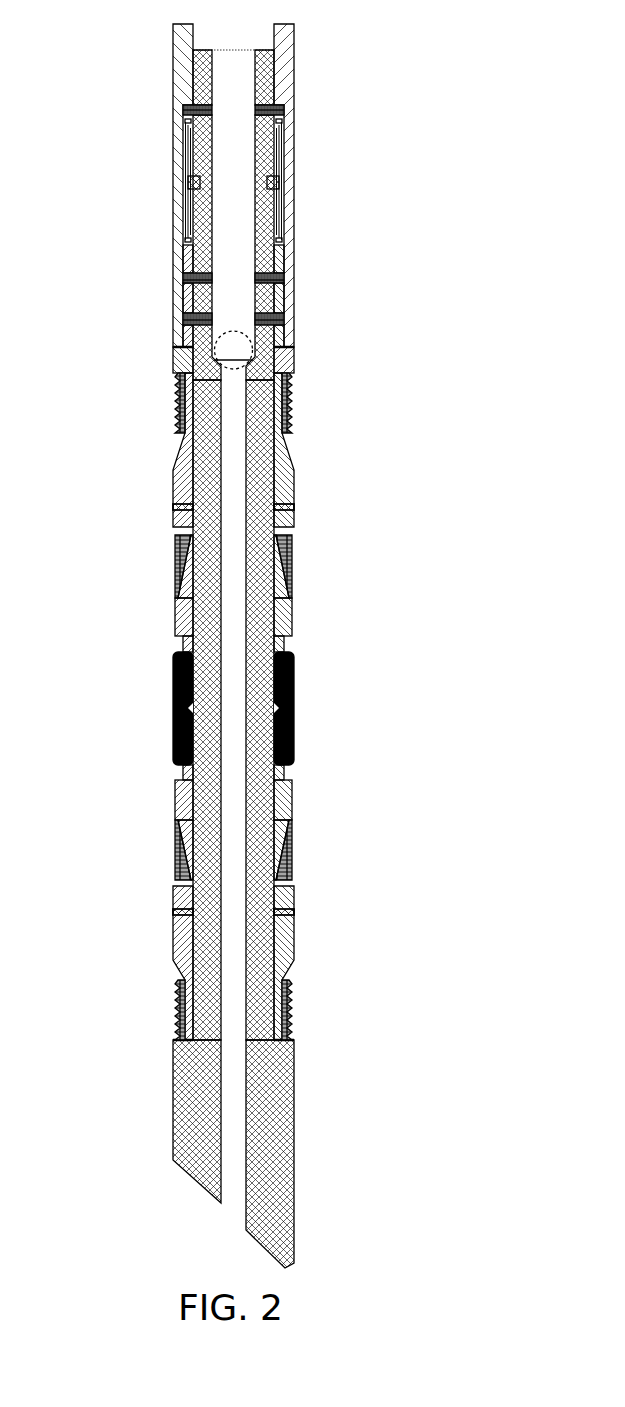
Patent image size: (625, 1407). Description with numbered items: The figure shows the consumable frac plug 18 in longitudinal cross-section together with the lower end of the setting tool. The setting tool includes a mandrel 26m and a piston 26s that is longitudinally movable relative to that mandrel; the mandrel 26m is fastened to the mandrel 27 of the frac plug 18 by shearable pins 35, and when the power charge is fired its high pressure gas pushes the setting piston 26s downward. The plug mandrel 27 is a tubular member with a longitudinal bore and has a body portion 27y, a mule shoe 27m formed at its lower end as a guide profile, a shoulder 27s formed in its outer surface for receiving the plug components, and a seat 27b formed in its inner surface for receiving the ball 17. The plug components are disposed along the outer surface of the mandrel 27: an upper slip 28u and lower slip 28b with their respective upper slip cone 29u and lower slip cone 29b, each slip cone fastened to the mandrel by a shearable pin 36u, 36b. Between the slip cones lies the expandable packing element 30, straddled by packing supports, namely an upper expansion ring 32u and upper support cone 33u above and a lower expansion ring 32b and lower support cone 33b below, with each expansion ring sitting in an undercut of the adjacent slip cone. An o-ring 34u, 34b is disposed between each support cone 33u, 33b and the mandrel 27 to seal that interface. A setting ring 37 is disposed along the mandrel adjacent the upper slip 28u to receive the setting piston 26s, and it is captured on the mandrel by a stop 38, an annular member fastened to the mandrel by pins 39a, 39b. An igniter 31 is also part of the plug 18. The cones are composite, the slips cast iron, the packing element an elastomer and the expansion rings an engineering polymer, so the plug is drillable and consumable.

The consumable frac plug 18 is at (120, 83).
The mandrel 26m is at (278, 24).
The piston 26s is at (293, 81).
The shearable pins 35 is at (178, 110).
The igniter 31 is at (152, 175).
The pin 39a is at (183, 277).
The pin 39b is at (183, 320).
The stop 38 is at (283, 298).
The ball 17 is at (238, 331).
The setting ring 37 is at (173, 358).
The seat 27b is at (258, 366).
The upper slip 28u is at (178, 403).
The upper slip cone 29u is at (178, 471).
The shearable pin 36u is at (286, 504).
The upper expansion ring 32u is at (178, 556).
The body portion 27y is at (258, 564).
The upper support cone 33u is at (178, 618).
The o-ring 34u is at (284, 648).
The packing element 30 is at (183, 707).
The o-ring 34b is at (283, 771).
The lower support cone 33b is at (178, 791).
The lower expansion ring 32b is at (178, 857).
The shearable pin 36b is at (286, 913).
The lower slip cone 29b is at (178, 940).
The lower slip 28b is at (178, 1002).
The shoulder 27s is at (182, 1042).
The mandrel 27 is at (222, 691).
The mule shoe 27m is at (173, 1150).